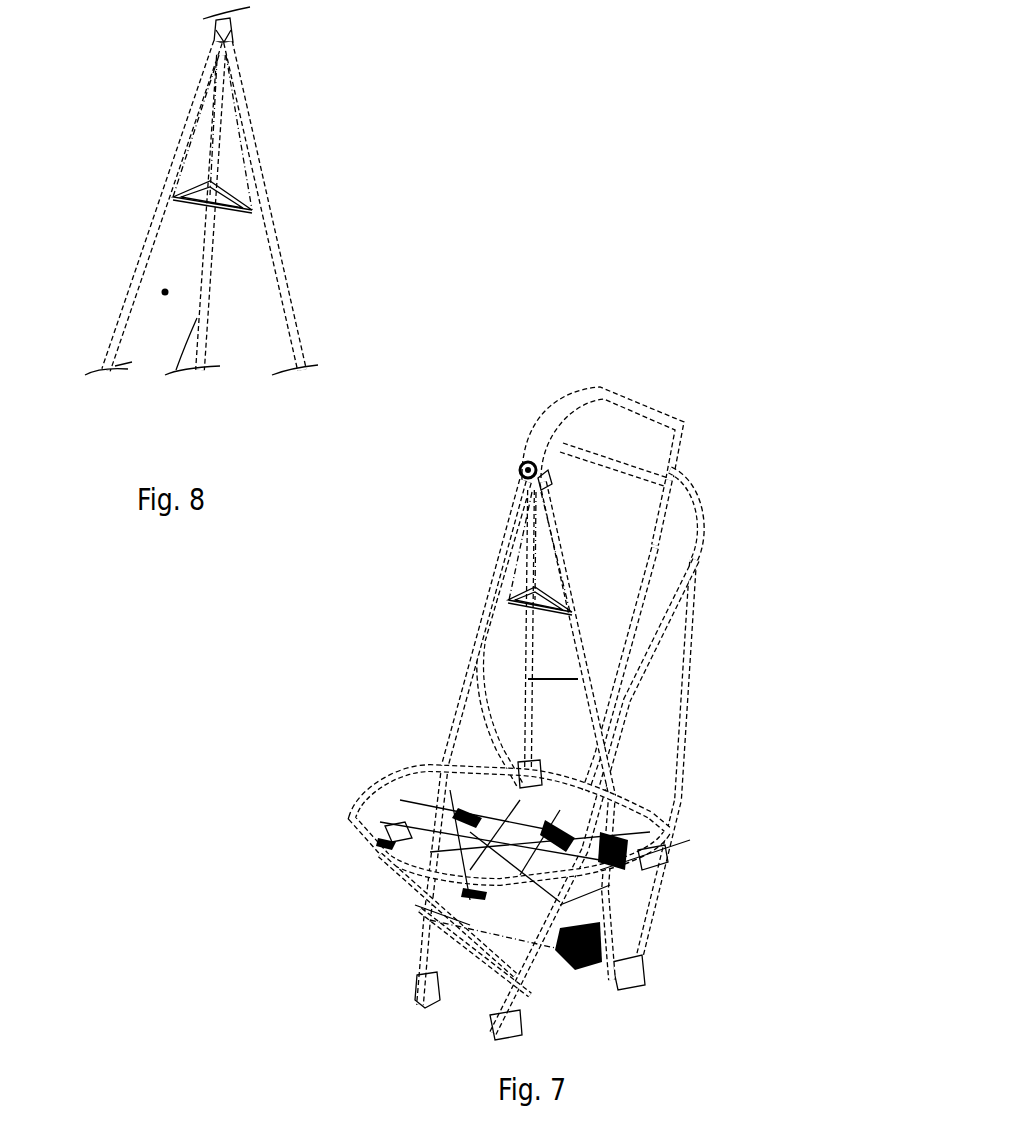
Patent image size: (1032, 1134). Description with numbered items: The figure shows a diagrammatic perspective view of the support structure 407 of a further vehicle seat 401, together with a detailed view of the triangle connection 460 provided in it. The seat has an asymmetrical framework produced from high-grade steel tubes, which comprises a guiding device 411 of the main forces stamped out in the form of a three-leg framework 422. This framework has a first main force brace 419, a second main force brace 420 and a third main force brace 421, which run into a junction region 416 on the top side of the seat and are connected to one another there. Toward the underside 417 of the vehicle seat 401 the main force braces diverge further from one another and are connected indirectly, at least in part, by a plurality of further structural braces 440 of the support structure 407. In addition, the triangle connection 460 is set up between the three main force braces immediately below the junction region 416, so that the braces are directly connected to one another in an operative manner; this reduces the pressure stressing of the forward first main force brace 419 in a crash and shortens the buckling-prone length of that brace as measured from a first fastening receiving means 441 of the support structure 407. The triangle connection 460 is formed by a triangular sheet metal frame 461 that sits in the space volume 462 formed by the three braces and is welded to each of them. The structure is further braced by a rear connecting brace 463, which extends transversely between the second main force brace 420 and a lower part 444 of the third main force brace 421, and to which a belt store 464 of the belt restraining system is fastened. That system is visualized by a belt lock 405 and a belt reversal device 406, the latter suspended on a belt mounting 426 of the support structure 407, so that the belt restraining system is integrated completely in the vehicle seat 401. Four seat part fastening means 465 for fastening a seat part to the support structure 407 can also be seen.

In FIG. 7, the vehicle seat 401 is at (680, 385).
In FIG. 7, the belt lock 405 is at (655, 860).
In FIG. 7, the belt reversal device 406 is at (515, 472).
In FIG. 7, the support structure 407 is at (335, 677).
In FIG. 8, the guiding device 411 is at (255, 400).
In FIG. 7, the guiding device 411 is at (505, 438).
In FIG. 8, the junction region 416 is at (178, 66).
In FIG. 7, the junction region 416 is at (560, 482).
In FIG. 7, the underside 417 is at (382, 968).
In FIG. 8, the first main force brace 419 is at (138, 262).
In FIG. 7, the first main force brace 419 is at (457, 712).
In FIG. 8, the second main force brace 420 is at (187, 325).
In FIG. 7, the second main force brace 420 is at (530, 686).
In FIG. 8, the third main force brace 421 is at (297, 337).
In FIG. 7, the third main force brace 421 is at (582, 645).
In FIG. 8, the three-leg framework 422 is at (318, 112).
In FIG. 7, the belt mounting 426 is at (535, 462).
In FIG. 7, the further structural braces 440 is at (698, 830).
In FIG. 7, the first fastening receiving means 441 is at (410, 988).
In FIG. 7, the lower part of the third main structural brace 444 is at (675, 945).
In FIG. 8, the triangle connection 460 is at (236, 228).
In FIG. 7, the triangle connection 460 is at (515, 580).
In FIG. 8, the triangular sheet metal frame 461 is at (192, 186).
In FIG. 7, the triangular sheet metal frame 461 is at (550, 598).
In FIG. 8, the space volume 462 is at (165, 295).
In FIG. 7, the space volume 462 is at (553, 664).
In FIG. 7, the rear connecting brace 463 is at (556, 810).
In FIG. 7, the belt store 464 is at (585, 965).
In FIG. 7, the seat part fastening means 465 is at (378, 832).